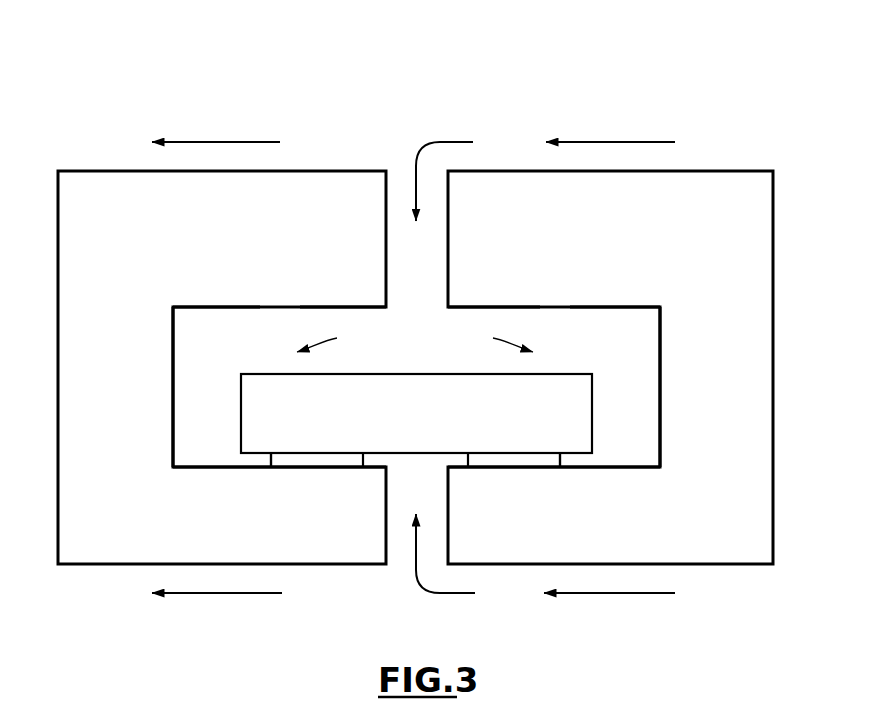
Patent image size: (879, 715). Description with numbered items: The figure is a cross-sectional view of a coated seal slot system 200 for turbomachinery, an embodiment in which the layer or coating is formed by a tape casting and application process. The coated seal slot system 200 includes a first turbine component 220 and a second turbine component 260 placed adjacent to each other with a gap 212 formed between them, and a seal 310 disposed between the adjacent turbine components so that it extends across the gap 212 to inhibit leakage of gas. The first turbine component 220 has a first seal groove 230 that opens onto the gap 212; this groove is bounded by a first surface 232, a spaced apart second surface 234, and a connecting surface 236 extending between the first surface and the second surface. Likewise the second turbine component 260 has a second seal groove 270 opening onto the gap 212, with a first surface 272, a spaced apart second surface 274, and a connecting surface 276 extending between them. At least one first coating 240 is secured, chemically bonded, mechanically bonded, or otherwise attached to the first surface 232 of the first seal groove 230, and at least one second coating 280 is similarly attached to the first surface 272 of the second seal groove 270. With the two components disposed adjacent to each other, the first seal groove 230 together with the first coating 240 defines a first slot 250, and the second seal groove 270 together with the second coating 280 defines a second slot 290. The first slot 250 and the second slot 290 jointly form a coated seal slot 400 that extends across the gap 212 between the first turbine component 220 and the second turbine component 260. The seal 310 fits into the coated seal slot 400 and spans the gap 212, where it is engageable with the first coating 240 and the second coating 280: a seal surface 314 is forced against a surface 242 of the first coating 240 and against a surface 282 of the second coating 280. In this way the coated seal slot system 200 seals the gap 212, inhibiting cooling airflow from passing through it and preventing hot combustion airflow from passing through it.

The coated seal slot system 200 is at (126, 69).
The gap 212 is at (398, 175).
The first turbine component 220 is at (93, 168).
The first seal groove 230 is at (331, 311).
The first surface 232 is at (223, 467).
The second surface 234 is at (243, 306).
The connecting surface 236 is at (174, 368).
The first coating 240 is at (310, 464).
The surface of coating 242 is at (292, 450).
The first slot 250 is at (339, 339).
The second turbine component 260 is at (737, 168).
The second seal groove 270 is at (504, 311).
The first surface 272 is at (608, 467).
The second surface 274 is at (591, 306).
The connecting surface 276 is at (659, 368).
The second coating 280 is at (523, 464).
The surface of coating 282 is at (542, 450).
The second slot 290 is at (491, 339).
The seal 310 is at (437, 411).
The seal surface 314 is at (393, 453).
The coated seal slot 400 is at (416, 402).